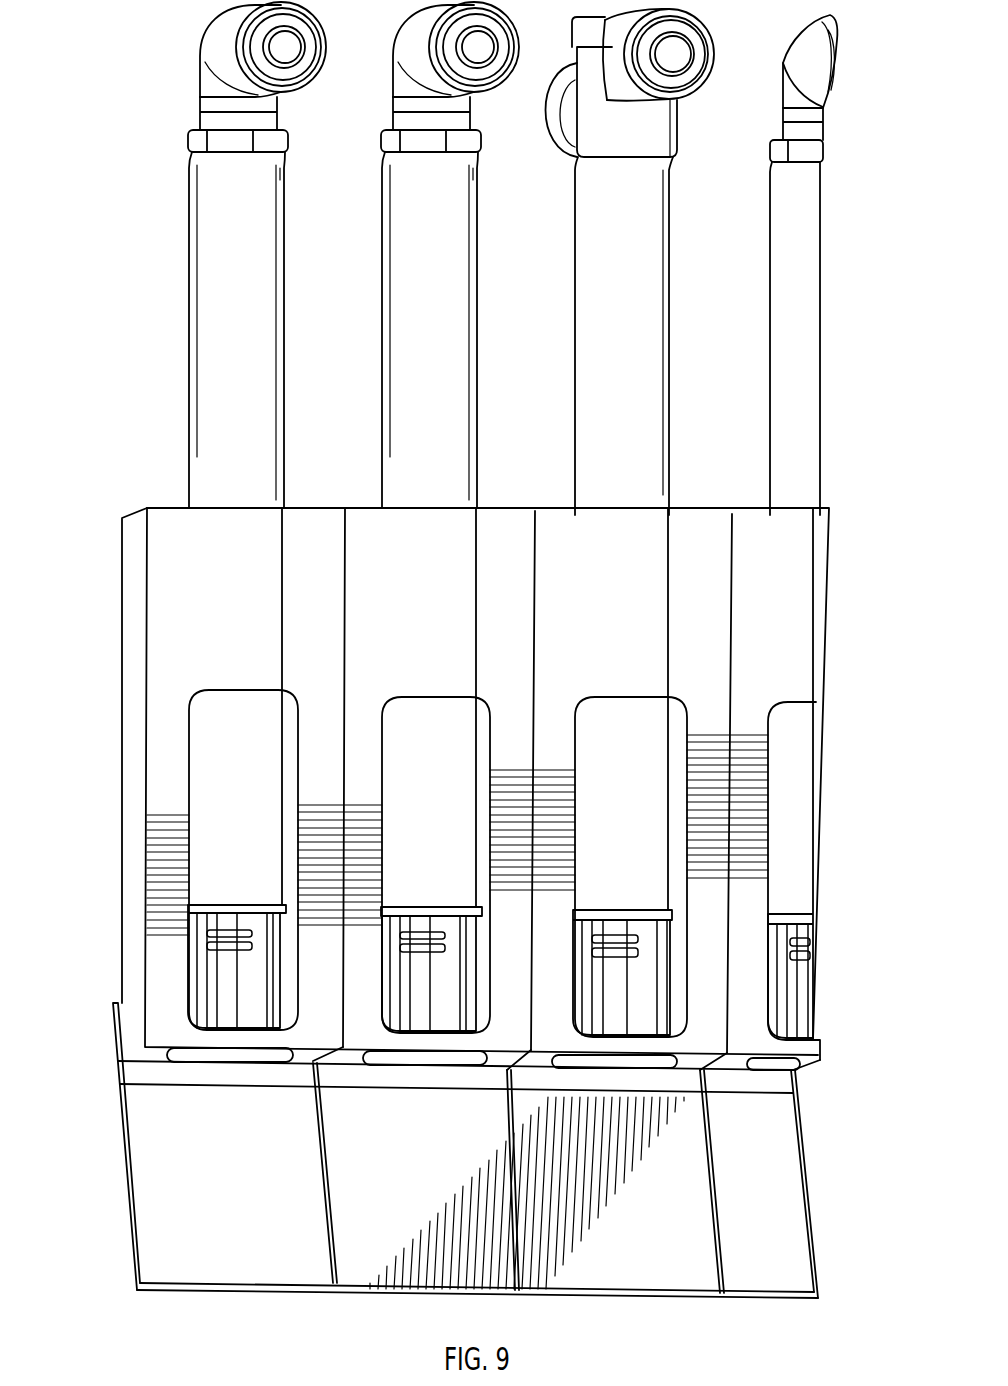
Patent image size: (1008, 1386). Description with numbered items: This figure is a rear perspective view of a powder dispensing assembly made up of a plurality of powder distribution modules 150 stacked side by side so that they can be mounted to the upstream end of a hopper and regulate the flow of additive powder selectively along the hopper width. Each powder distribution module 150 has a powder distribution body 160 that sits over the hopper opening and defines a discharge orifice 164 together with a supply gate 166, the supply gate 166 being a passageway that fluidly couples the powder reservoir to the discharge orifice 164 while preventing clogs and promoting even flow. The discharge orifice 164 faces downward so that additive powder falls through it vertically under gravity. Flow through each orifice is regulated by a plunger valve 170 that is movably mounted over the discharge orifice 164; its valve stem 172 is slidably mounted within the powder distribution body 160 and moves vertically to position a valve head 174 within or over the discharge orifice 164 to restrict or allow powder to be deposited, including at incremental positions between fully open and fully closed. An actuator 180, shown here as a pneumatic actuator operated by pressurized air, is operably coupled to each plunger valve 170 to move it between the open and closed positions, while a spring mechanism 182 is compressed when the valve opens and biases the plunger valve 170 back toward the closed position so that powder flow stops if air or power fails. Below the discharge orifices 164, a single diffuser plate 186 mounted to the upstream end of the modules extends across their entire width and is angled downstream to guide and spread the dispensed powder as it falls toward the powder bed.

The powder distribution module 150 is at (802, 616).
The powder distribution body 160 is at (165, 577).
The discharge orifice 164 is at (173, 1062).
The supply gate 166 is at (183, 975).
The plunger valve 170 is at (213, 1013).
The valve stem 172 is at (227, 987).
The valve head 174 is at (222, 1055).
The actuator 180 is at (410, 408).
The spring mechanism 182 is at (207, 932).
The diffuser plate 186 is at (763, 1192).